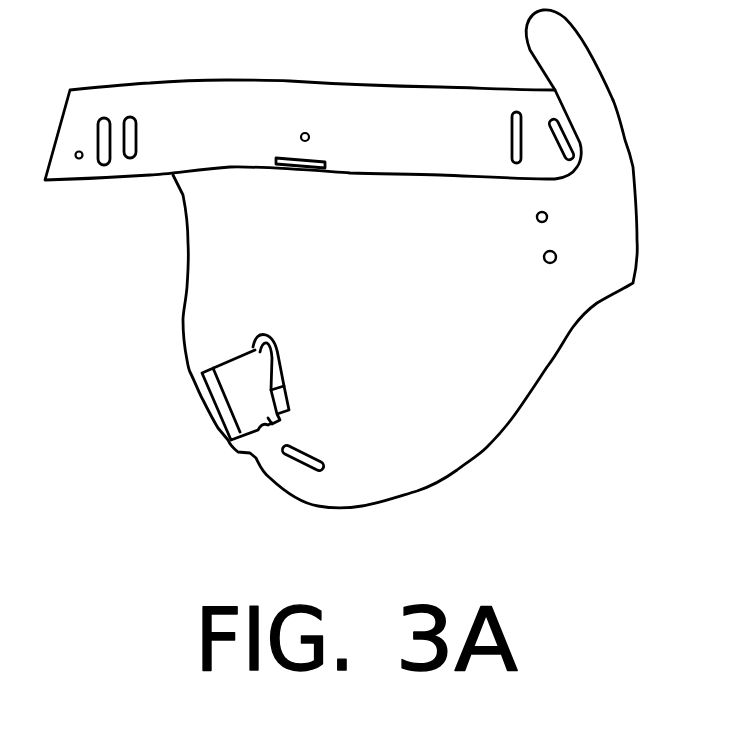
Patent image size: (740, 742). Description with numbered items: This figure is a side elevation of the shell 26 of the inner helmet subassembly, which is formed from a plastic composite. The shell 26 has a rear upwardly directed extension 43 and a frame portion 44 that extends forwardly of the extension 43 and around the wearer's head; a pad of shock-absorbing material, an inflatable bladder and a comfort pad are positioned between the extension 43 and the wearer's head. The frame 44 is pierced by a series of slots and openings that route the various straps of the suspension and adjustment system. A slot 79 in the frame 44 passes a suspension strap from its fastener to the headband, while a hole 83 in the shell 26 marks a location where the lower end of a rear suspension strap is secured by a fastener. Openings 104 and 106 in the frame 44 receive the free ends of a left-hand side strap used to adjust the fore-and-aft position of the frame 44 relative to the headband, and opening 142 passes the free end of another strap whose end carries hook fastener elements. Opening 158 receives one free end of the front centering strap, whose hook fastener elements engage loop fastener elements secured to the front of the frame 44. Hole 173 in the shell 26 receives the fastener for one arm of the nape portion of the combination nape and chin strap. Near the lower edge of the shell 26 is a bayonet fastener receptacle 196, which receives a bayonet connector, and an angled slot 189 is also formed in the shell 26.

The shell 26 is at (530, 354).
The frame portion 44 is at (228, 105).
The rear upwardly directed extension 43 is at (571, 58).
The slot 79 is at (333, 125).
The hole 83 is at (535, 220).
The opening 104 is at (509, 120).
The opening 106 is at (137, 122).
The opening 142 is at (572, 143).
The opening 158 is at (99, 163).
The hole 173 is at (547, 263).
The angled slot 189 is at (308, 448).
The bayonet fastener receptacle 196 is at (242, 385).